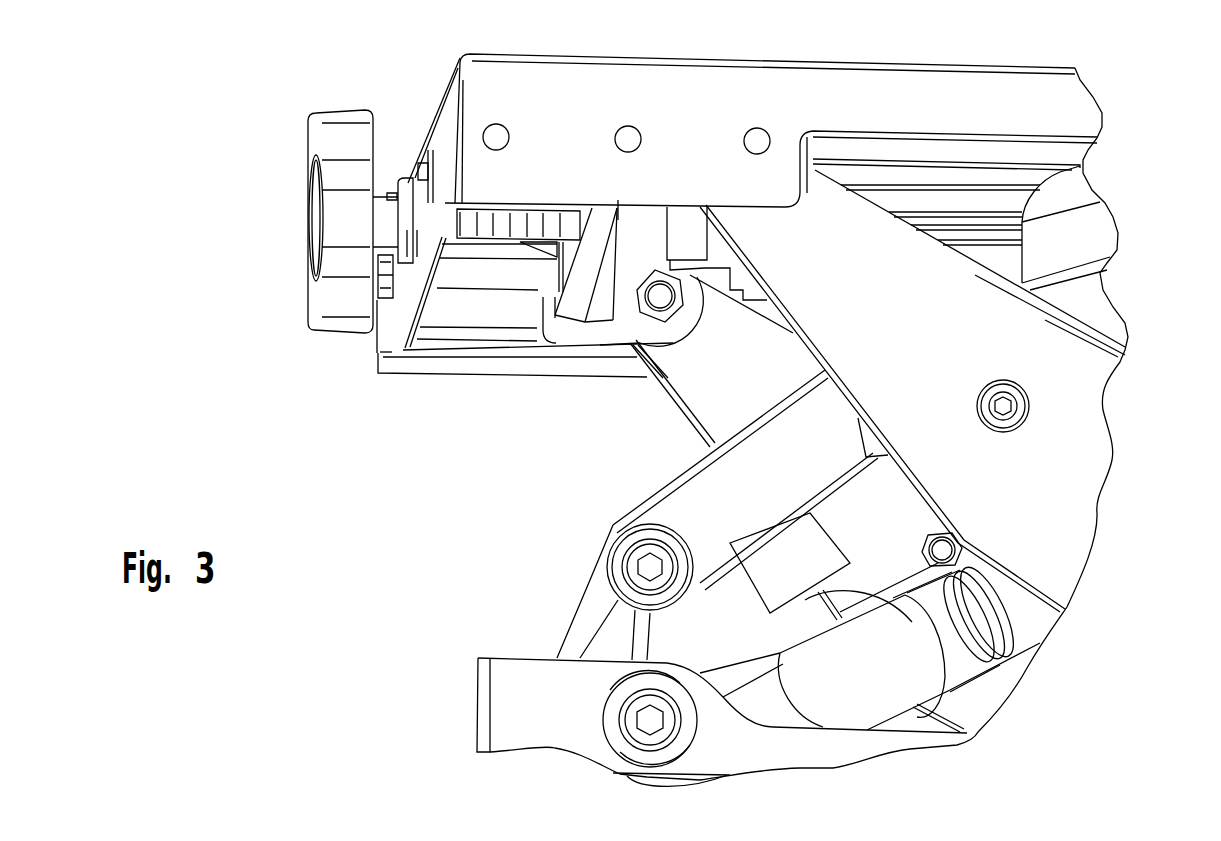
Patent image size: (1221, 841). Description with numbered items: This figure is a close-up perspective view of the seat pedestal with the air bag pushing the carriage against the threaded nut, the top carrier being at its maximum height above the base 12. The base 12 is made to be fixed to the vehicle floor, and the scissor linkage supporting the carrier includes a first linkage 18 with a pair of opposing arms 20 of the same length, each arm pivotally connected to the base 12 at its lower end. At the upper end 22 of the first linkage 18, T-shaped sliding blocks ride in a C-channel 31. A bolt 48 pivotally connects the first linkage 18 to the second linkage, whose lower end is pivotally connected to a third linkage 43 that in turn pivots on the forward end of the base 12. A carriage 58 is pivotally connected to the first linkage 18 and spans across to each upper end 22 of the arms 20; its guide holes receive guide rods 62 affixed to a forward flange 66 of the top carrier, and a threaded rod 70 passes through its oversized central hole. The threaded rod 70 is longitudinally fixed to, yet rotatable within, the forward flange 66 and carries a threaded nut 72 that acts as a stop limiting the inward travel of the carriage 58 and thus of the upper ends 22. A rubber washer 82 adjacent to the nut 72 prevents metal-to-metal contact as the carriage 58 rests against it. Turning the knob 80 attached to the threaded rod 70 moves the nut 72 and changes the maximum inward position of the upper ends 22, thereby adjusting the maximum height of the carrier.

The base 12 is at (670, 719).
The first linkage 18 is at (877, 617).
The arms 20 is at (922, 400).
The upper end 22 is at (722, 464).
The C-channel 31 is at (471, 350).
The third linkage 43 is at (599, 592).
The bolt 48 is at (1074, 406).
The carriage 58 is at (586, 324).
The guide rods 62 is at (475, 348).
The forward flange 66 is at (470, 234).
The threaded rod 70 is at (518, 124).
The threaded nut 72 is at (727, 136).
The knob 80 is at (287, 210).
The rubber washer 82 is at (771, 112).